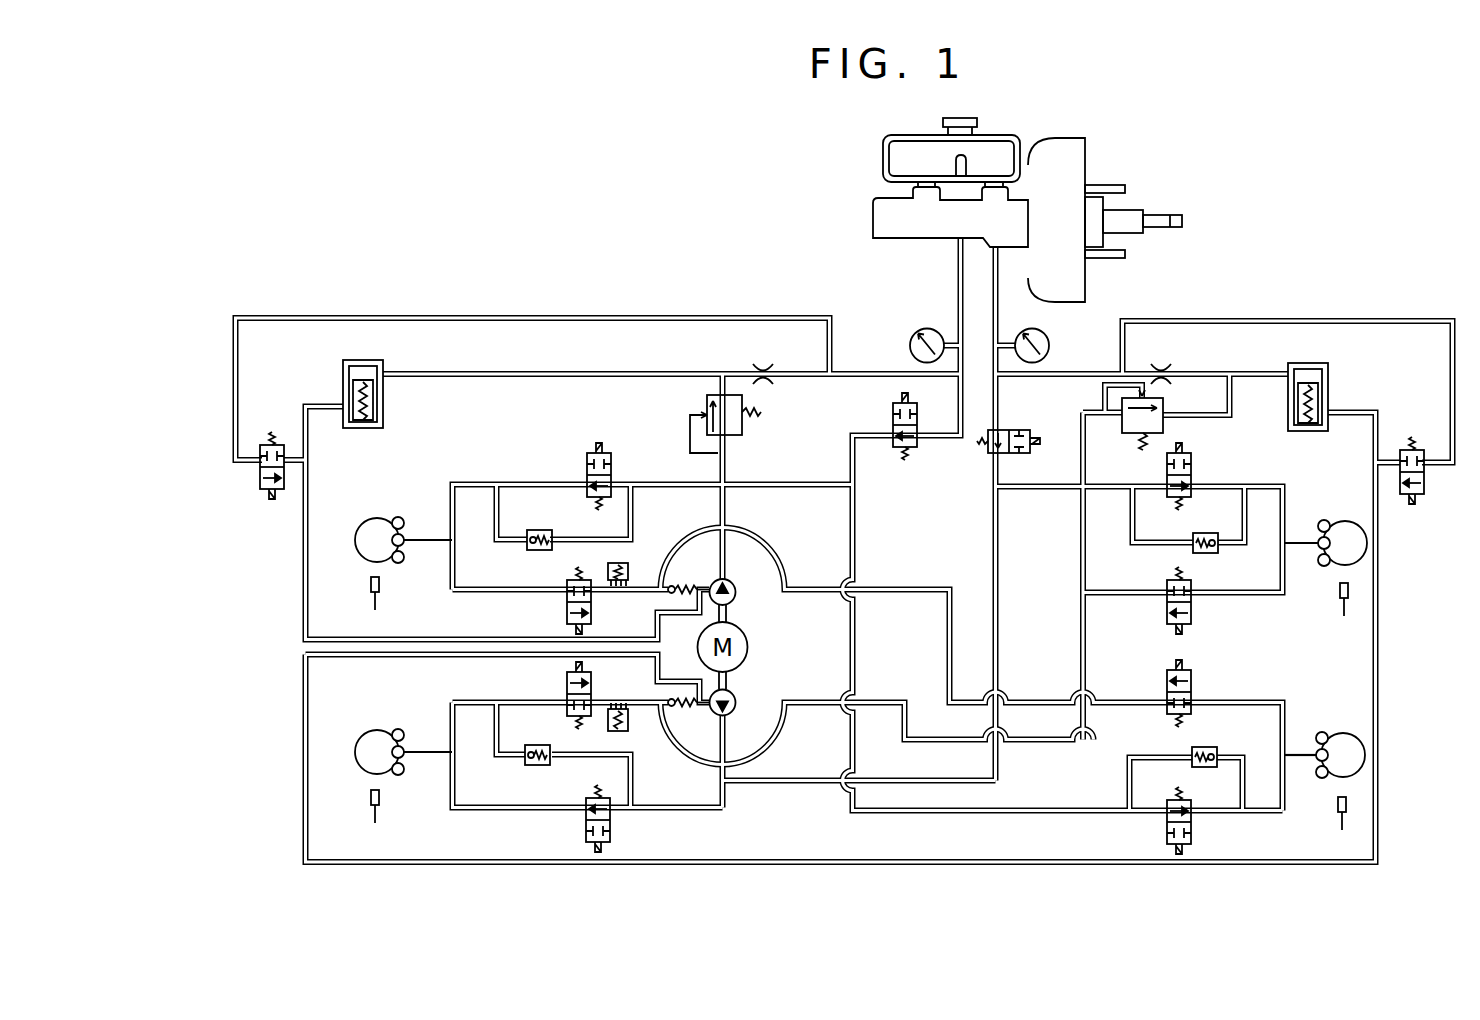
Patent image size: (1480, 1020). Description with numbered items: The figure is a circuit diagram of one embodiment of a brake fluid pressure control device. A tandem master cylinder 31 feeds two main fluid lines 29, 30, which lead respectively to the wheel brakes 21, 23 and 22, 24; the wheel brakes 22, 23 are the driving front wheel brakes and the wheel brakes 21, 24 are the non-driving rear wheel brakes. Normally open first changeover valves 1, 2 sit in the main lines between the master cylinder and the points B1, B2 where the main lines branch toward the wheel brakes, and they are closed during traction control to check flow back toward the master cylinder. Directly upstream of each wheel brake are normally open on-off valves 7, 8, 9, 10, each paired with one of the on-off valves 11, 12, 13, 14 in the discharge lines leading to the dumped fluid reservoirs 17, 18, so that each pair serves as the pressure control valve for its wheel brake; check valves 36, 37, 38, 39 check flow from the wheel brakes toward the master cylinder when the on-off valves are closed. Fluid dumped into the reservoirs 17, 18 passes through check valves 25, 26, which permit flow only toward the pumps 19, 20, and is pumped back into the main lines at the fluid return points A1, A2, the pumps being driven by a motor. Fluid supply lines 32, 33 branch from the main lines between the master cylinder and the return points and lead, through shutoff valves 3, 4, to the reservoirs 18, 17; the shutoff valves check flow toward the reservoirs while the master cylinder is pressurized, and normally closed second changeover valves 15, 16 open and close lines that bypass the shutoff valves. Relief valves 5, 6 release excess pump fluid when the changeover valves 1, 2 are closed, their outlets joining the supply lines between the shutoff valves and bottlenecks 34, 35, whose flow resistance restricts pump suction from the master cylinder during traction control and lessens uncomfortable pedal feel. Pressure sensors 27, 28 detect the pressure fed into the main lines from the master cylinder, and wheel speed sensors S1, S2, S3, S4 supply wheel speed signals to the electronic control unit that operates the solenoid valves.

The first changeover valve 1 is at (990, 450).
The first changeover valve 2 is at (917, 411).
The shutoff valve 3 is at (1337, 365).
The shutoff valve 4 is at (336, 373).
The relief valve 5 is at (1122, 430).
The relief valve 6 is at (737, 432).
The on-off valve 7 is at (1191, 470).
The on-off valve 8 is at (587, 460).
The on-off valve 9 is at (610, 832).
The on-off valve 10 is at (1166, 838).
The on-off valve 11 is at (1166, 585).
The on-off valve 12 is at (567, 608).
The on-off valve 13 is at (567, 685).
The on-off valve 14 is at (1166, 690).
The second changeover valve 15 is at (1424, 487).
The second changeover valve 16 is at (260, 477).
The dumped fluid reservoir 17 is at (628, 565).
The dumped fluid reservoir 18 is at (628, 727).
The pump 19 is at (735, 598).
The pump 20 is at (735, 697).
The wheel brake 21 is at (1320, 521).
The wheel brake 22 is at (398, 517).
The wheel brake 23 is at (401, 733).
The wheel brake 24 is at (1321, 733).
The check valve 25 is at (686, 583).
The check valve 26 is at (682, 710).
The pressure sensor 27 is at (1050, 345).
The pressure sensor 28 is at (910, 341).
The main fluid line 29 is at (995, 313).
The main fluid line 30 is at (957, 285).
The master cylinder 31 is at (878, 212).
The fluid supply line 32 is at (1087, 380).
The fluid supply line 33 is at (865, 380).
The bottleneck 34 is at (1167, 365).
The bottleneck 35 is at (773, 364).
The check valve 36 is at (1210, 554).
The check valve 37 is at (541, 529).
The check valve 38 is at (540, 766).
The check valve 39 is at (1210, 748).
The fluid return point A1 is at (725, 490).
The fluid return point A2 is at (725, 790).
The branch point B1 is at (855, 488).
The branch point B2 is at (1003, 495).
The wheel speed sensor S1 is at (1337, 614).
The wheel speed sensor S2 is at (372, 603).
The wheel speed sensor S3 is at (372, 820).
The wheel speed sensor S4 is at (1343, 829).